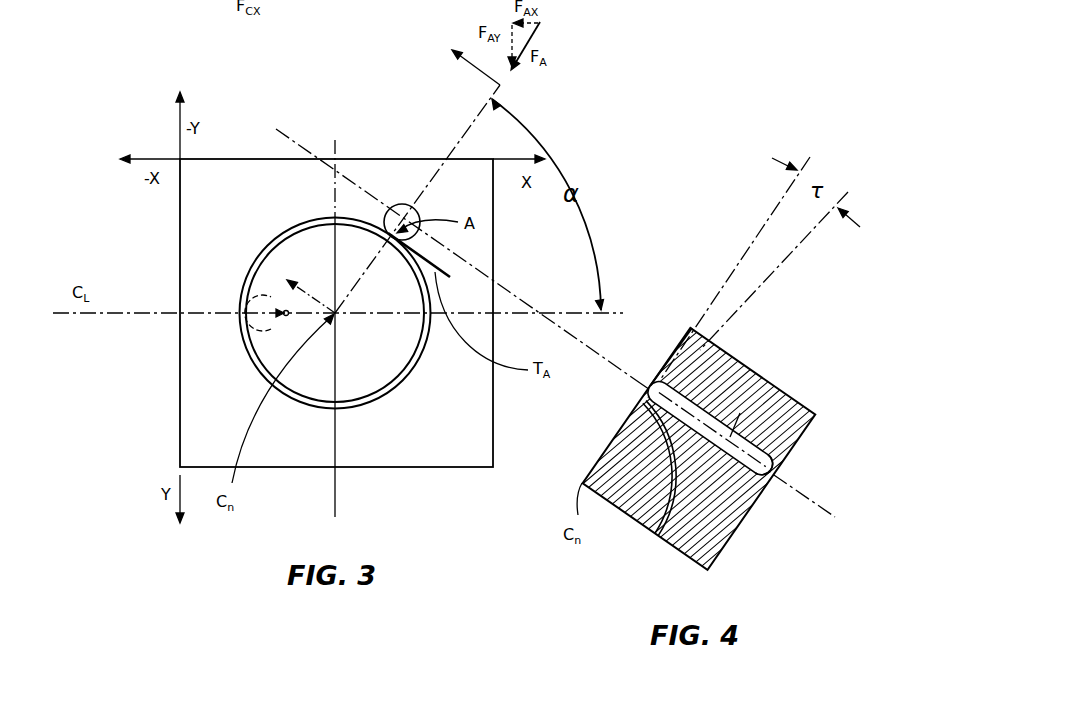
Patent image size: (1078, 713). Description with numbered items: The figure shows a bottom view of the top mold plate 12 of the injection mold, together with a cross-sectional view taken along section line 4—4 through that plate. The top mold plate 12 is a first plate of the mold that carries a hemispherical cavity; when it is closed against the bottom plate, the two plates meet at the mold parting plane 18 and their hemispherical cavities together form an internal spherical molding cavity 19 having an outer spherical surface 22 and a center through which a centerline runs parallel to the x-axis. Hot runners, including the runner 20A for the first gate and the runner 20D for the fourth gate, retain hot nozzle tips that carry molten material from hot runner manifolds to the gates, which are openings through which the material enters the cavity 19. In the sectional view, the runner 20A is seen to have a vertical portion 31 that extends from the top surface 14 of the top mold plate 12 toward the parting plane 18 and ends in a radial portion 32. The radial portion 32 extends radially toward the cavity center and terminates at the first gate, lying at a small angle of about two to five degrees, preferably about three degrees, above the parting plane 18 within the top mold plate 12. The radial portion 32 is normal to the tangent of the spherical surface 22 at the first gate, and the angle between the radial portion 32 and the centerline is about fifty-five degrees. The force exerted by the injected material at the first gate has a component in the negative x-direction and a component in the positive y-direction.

In FIG. 3, the section line 4— 4 is at (385, 178).
In FIG. 3, the top mold plate 12 is at (493, 413).
In FIG. 4, the top surface 14 is at (733, 537).
In FIG. 4, the mold parting plane 18 is at (672, 355).
In FIG. 3, the spherical molding cavity 19 is at (318, 403).
In FIG. 3, the hot runner 20A is at (402, 203).
In FIG. 4, the hot runner 20A is at (766, 465).
In FIG. 3, the hot runner 20D is at (243, 325).
In FIG. 3, the outer spherical surface 22 is at (383, 395).
In FIG. 4, the vertical portion 31 is at (740, 413).
In FIG. 4, the radial portion 32 is at (705, 398).